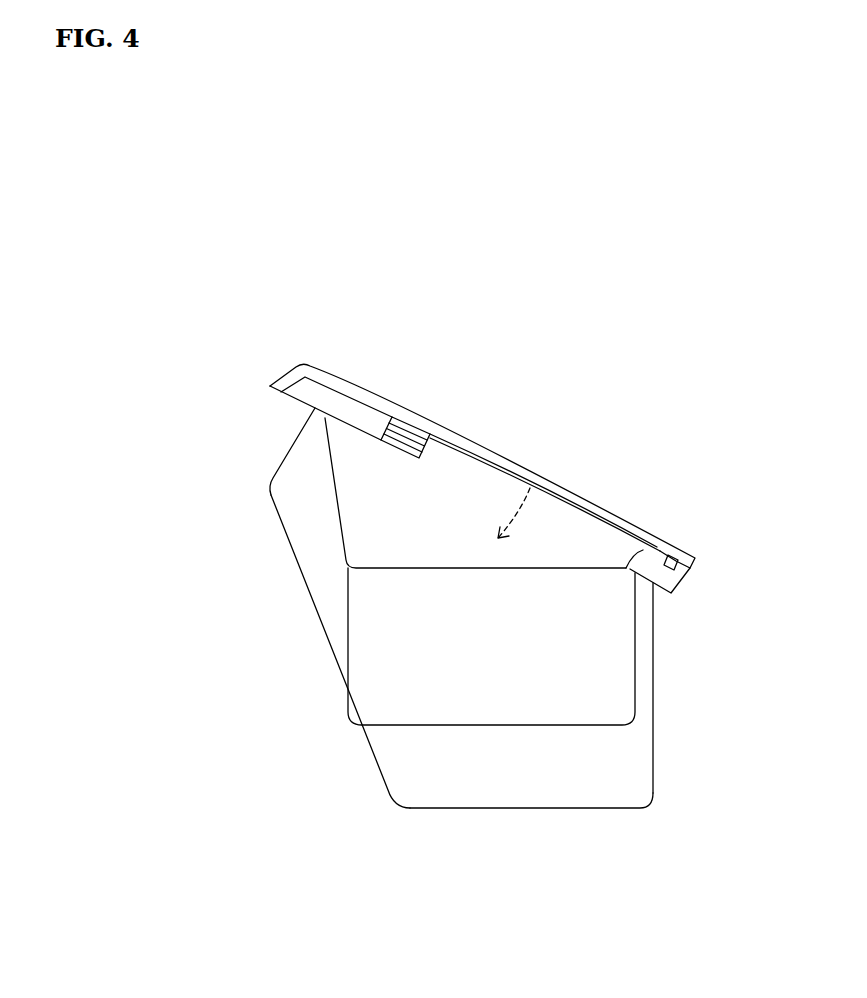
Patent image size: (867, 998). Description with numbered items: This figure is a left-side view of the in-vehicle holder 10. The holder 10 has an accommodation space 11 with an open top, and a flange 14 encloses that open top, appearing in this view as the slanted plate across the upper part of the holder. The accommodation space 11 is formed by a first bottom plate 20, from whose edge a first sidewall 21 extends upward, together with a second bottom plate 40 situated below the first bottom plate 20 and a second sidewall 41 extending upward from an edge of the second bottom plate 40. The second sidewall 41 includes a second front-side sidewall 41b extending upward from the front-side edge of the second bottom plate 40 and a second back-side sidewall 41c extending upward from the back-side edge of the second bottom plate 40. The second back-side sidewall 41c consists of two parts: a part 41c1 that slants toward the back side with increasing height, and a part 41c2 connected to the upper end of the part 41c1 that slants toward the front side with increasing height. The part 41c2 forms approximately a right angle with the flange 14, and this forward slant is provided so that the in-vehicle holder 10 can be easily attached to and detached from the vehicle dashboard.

The in-vehicle holder 10 is at (713, 378).
The accommodation space 11 is at (540, 480).
The flange 14 is at (673, 547).
The first bottom plate 20 is at (393, 727).
The first sidewall 21 is at (350, 673).
The second bottom plate 40 is at (567, 808).
The second sidewall 41 is at (461, 608).
The second front-side sidewall 41b is at (657, 630).
The second back-side sidewall 41c is at (282, 608).
The part slanting toward the back side 41c1 is at (303, 582).
The part slanting toward the front side 41c2 is at (294, 447).